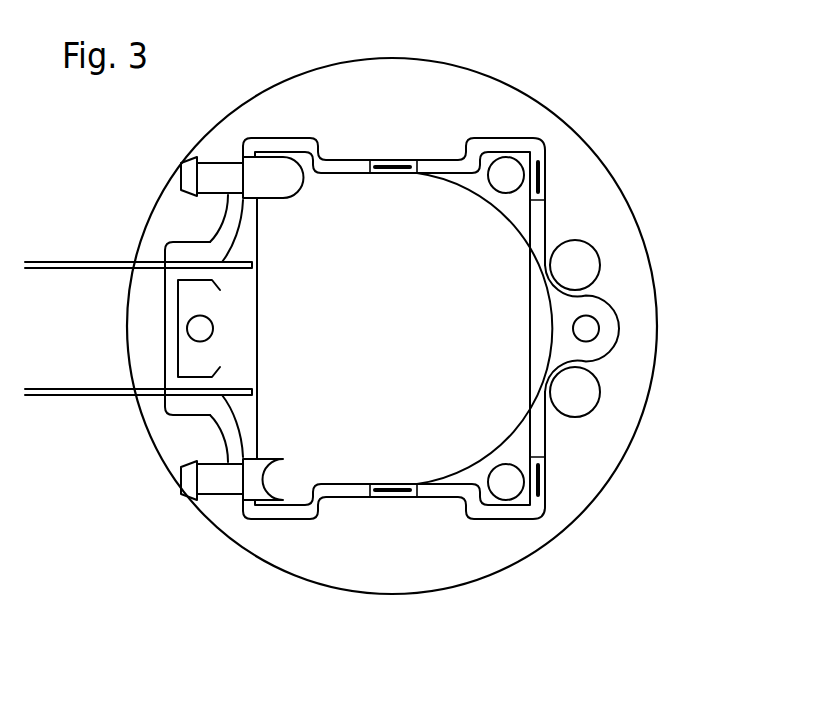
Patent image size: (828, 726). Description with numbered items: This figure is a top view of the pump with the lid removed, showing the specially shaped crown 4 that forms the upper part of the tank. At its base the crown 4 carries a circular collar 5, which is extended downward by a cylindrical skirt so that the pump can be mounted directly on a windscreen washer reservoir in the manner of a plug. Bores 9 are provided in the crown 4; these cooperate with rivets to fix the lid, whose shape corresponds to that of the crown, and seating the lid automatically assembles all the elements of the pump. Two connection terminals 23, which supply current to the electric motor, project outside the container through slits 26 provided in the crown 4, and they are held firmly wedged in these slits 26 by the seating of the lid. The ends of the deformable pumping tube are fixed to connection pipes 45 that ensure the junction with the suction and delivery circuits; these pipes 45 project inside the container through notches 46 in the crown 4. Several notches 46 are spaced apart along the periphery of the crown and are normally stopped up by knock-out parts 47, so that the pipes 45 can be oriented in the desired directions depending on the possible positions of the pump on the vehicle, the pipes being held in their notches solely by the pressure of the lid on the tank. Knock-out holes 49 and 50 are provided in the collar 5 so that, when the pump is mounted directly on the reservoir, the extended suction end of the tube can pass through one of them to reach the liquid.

The crown 4 is at (290, 138).
The circular collar 5 is at (603, 200).
The bores 9 is at (195, 328).
The connection terminals 23 is at (92, 263).
The slits 26 is at (185, 243).
The connection pipes 45 is at (205, 176).
The notches 46 is at (250, 153).
The knock-out parts 47 is at (400, 165).
The knock-out hole 49 is at (512, 168).
The knock-out hole 50 is at (578, 262).